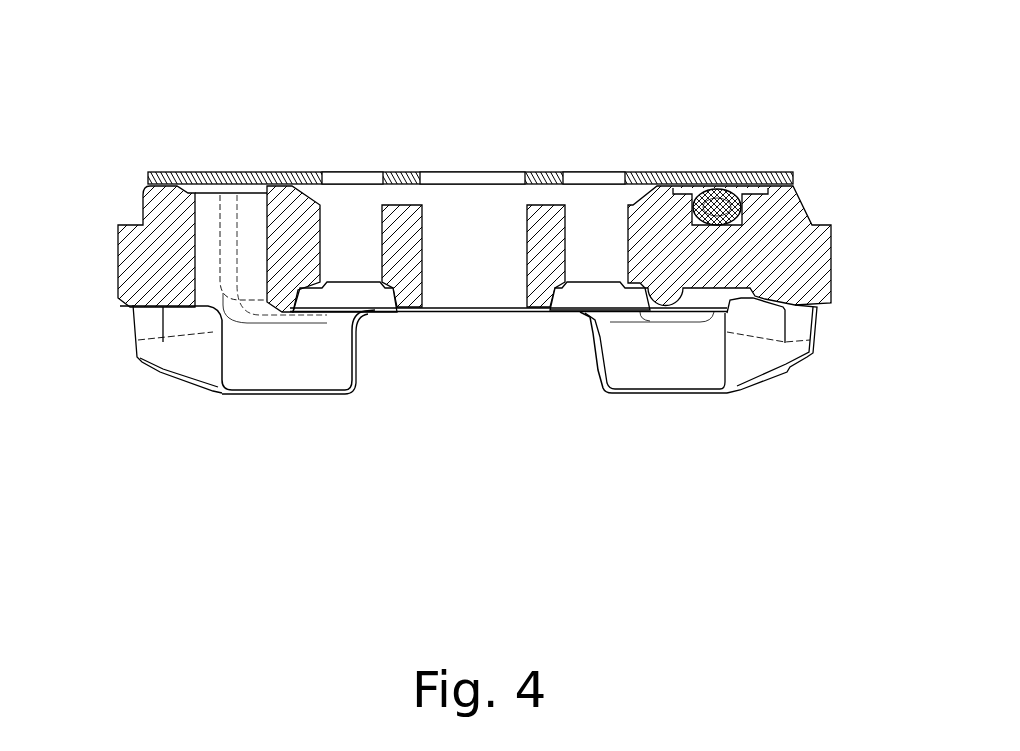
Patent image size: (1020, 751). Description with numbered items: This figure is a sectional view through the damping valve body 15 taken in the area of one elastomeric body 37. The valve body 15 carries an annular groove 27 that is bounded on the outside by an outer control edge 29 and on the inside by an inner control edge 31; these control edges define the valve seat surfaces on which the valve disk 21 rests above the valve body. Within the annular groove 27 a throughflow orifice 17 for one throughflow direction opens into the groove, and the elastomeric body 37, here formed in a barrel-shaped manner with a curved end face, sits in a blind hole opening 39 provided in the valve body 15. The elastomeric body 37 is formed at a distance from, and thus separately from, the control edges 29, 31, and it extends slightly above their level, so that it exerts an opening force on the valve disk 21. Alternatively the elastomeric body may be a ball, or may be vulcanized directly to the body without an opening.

The damping valve body 15 is at (740, 262).
The throughflow orifice 17 is at (228, 258).
The valve disk 21 is at (732, 177).
The annular groove 27 is at (755, 190).
The outer control edge 29 is at (147, 200).
The inner control edge 31 is at (278, 185).
The elastomeric body 37 is at (698, 182).
The blind hole opening 39 is at (747, 210).